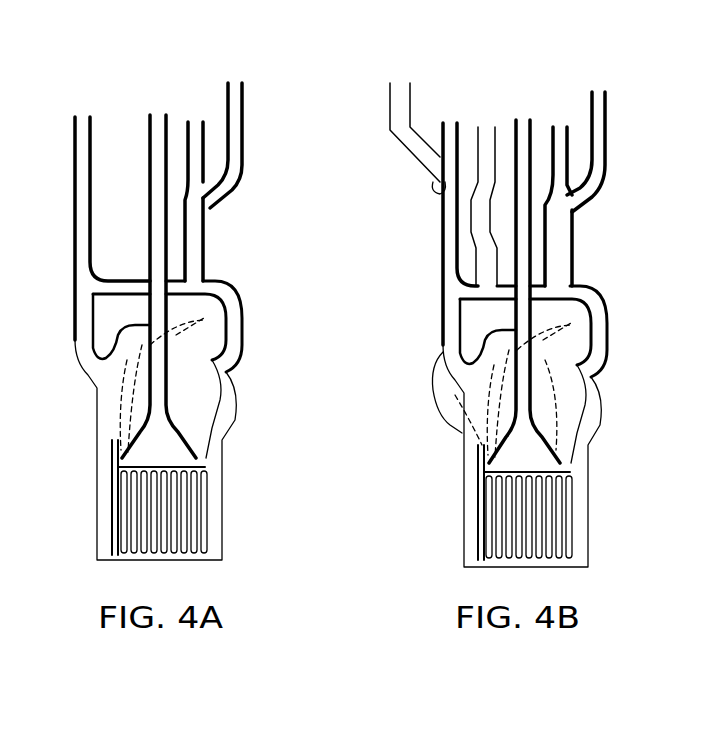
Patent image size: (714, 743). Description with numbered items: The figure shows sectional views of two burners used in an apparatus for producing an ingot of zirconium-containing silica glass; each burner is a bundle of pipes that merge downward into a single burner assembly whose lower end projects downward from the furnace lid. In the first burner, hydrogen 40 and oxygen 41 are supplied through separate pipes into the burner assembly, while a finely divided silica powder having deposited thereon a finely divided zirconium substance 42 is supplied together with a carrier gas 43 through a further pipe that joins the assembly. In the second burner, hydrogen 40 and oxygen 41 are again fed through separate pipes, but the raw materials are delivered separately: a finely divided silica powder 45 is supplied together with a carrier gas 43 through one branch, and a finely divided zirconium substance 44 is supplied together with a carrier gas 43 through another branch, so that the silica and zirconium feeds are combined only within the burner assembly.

In FIG. 4A, the hydrogen 40 is at (83, 112).
In FIG. 4B, the hydrogen 40 is at (450, 120).
In FIG. 4A, the oxygen 41 is at (157, 110).
In FIG. 4B, the oxygen 41 is at (523, 118).
In FIG. 4A, the finely divided silica powder having deposited thereon a finely divided zirconium 42 is at (197, 117).
In FIG. 4A, the carrier gas 43 is at (233, 80).
In FIG. 4B, the carrier gas 43 is at (400, 82).
In FIG. 4B, the finely divided zirconium substance 44 is at (487, 123).
In FIG. 4B, the finely divided silica powder 45 is at (562, 123).